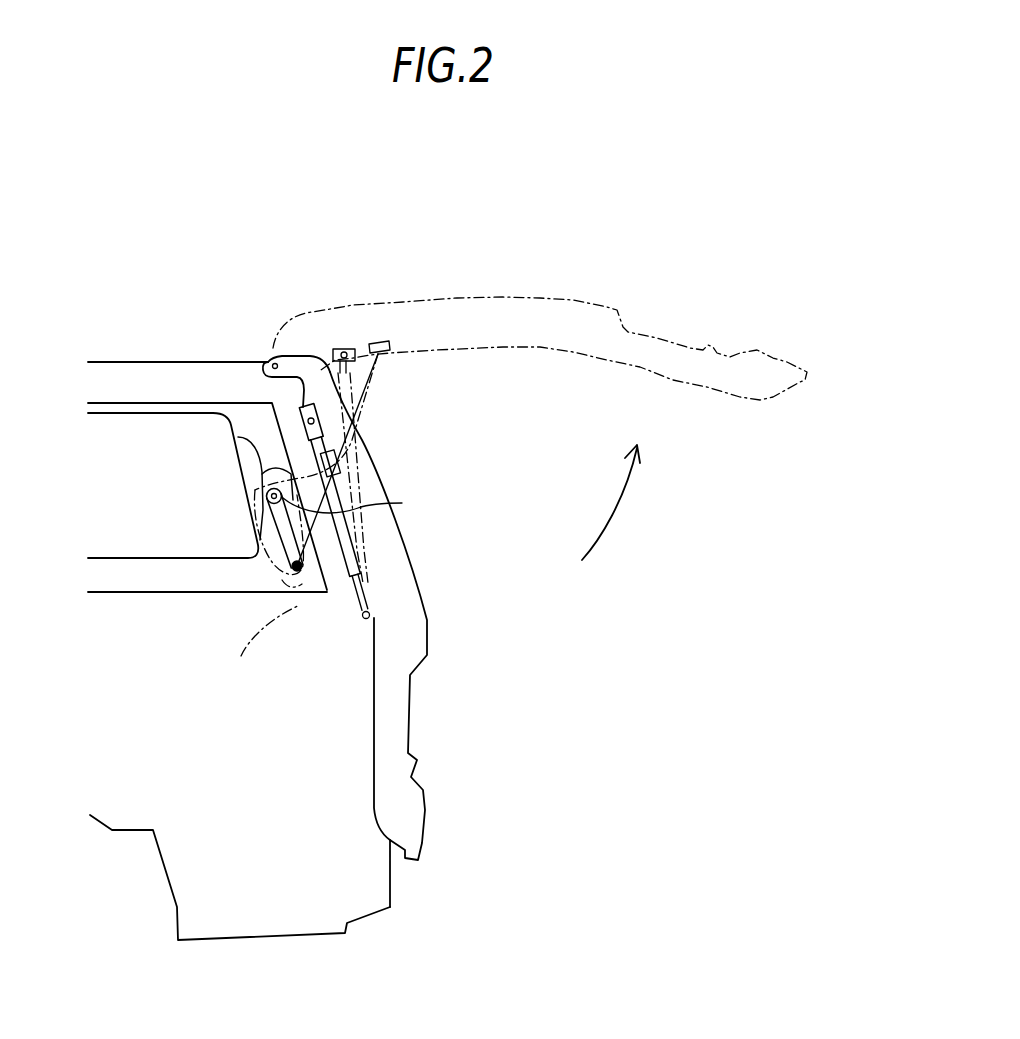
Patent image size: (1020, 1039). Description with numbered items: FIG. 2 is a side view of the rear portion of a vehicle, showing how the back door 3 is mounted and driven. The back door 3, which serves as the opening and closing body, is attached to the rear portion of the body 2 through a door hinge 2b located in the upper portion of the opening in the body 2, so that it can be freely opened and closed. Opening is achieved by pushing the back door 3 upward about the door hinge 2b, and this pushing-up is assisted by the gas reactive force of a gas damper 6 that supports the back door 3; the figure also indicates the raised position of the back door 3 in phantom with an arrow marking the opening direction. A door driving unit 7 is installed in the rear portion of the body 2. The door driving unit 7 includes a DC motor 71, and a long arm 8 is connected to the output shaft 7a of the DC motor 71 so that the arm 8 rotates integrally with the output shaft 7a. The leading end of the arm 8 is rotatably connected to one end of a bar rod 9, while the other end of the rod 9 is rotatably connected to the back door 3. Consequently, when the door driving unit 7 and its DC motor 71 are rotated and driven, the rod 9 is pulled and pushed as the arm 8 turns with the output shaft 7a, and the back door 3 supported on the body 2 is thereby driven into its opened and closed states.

The body 2 is at (153, 361).
The door hinge 2b is at (272, 358).
The back door 3 is at (430, 626).
The gas damper 6 is at (352, 573).
The door driving unit 7 is at (268, 593).
The DC motor 71 is at (253, 651).
The output shaft 7a is at (238, 437).
The arm 8 is at (266, 497).
The rod 9 is at (337, 453).